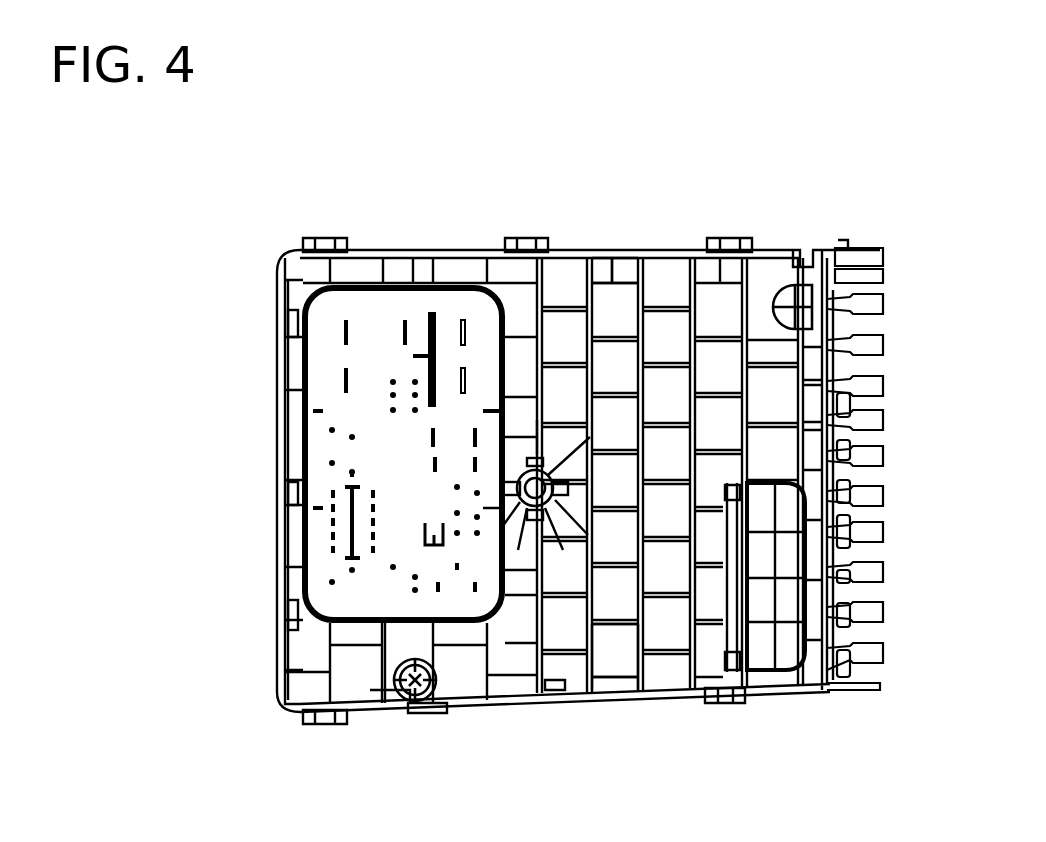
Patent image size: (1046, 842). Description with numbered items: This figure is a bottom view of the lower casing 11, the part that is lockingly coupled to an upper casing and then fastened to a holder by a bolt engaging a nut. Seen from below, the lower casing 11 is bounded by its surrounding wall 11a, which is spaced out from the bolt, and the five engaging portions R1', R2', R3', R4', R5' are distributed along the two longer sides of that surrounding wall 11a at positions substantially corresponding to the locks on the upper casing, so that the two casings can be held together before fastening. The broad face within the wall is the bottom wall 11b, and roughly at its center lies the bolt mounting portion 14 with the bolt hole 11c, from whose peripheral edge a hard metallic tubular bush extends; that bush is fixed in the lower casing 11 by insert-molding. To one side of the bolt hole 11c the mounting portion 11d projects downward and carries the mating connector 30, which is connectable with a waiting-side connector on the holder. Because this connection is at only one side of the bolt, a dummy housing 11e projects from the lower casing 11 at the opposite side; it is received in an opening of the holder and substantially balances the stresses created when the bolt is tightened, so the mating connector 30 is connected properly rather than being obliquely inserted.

The lower casing 11 is at (279, 250).
The surrounding wall 11a is at (628, 248).
The bottom wall 11b is at (620, 647).
The bolt hole 11c is at (533, 505).
The mounting portion 11d is at (300, 448).
The dummy housing 11e is at (800, 640).
The bolt mounting portion 14 is at (545, 508).
The mating connector 30 is at (360, 410).
The engaging portion R1' is at (330, 761).
The engaging portion R2' is at (734, 740).
The engaging portion R3' is at (326, 202).
The engaging portion R4' is at (530, 202).
The engaging portion R5' is at (777, 202).